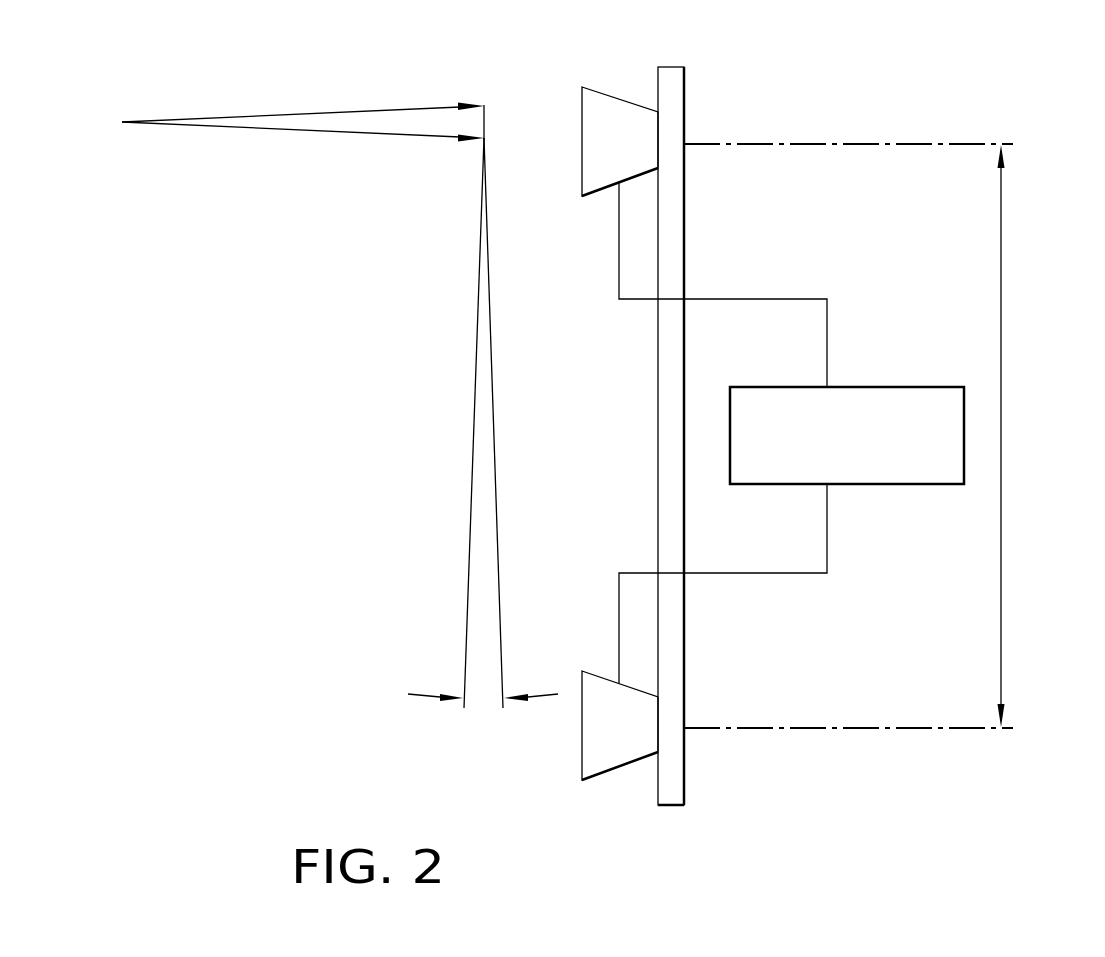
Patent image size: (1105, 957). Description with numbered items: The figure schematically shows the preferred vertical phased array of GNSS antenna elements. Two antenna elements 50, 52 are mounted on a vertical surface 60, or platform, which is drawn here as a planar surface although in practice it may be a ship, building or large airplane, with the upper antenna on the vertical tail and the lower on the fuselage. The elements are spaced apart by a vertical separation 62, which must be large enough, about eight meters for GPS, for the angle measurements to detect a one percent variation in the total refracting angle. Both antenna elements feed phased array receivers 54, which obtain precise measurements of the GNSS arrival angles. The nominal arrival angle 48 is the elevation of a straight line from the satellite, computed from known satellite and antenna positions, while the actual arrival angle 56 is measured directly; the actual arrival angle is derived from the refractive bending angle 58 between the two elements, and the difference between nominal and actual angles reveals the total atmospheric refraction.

The nominal arrival angle 48 is at (433, 104).
The actual arrival angle 56 is at (423, 142).
The refractive bending angle 58 is at (428, 698).
The antenna element 50 is at (612, 93).
The antenna element 52 is at (618, 772).
The phased array receiver 54 is at (876, 387).
The vertical surface 60 is at (658, 437).
The vertical separation 62 is at (1002, 437).